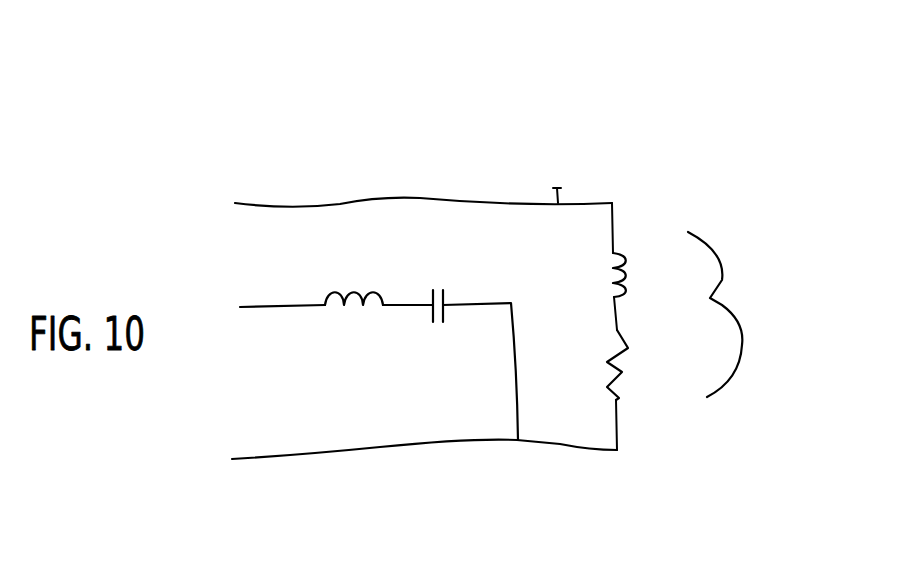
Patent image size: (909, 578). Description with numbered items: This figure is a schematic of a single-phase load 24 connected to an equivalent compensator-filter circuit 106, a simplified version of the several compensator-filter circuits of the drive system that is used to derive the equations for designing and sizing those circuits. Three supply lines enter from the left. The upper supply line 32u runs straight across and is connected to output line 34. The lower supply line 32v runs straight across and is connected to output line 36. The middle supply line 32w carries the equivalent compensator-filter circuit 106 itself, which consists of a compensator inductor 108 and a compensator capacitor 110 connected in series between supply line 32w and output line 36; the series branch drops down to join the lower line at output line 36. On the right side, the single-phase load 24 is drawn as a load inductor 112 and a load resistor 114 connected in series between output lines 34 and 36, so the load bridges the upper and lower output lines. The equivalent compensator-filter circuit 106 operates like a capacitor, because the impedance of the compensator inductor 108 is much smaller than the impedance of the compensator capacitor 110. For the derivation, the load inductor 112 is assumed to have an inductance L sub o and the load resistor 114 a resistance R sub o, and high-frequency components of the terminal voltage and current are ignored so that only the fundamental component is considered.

The equivalent compensator-filter circuit 106 is at (433, 87).
The supply line 32u is at (256, 208).
The supply line 32w is at (253, 310).
The supply line 32v is at (260, 457).
The output line 34 is at (579, 170).
The output line 36 is at (565, 447).
The compensator inductor 108 is at (360, 290).
The compensator capacitor 110 is at (448, 318).
The load inductor 112 is at (660, 283).
The load resistor 114 is at (627, 365).
The single-phase load 24 is at (730, 306).